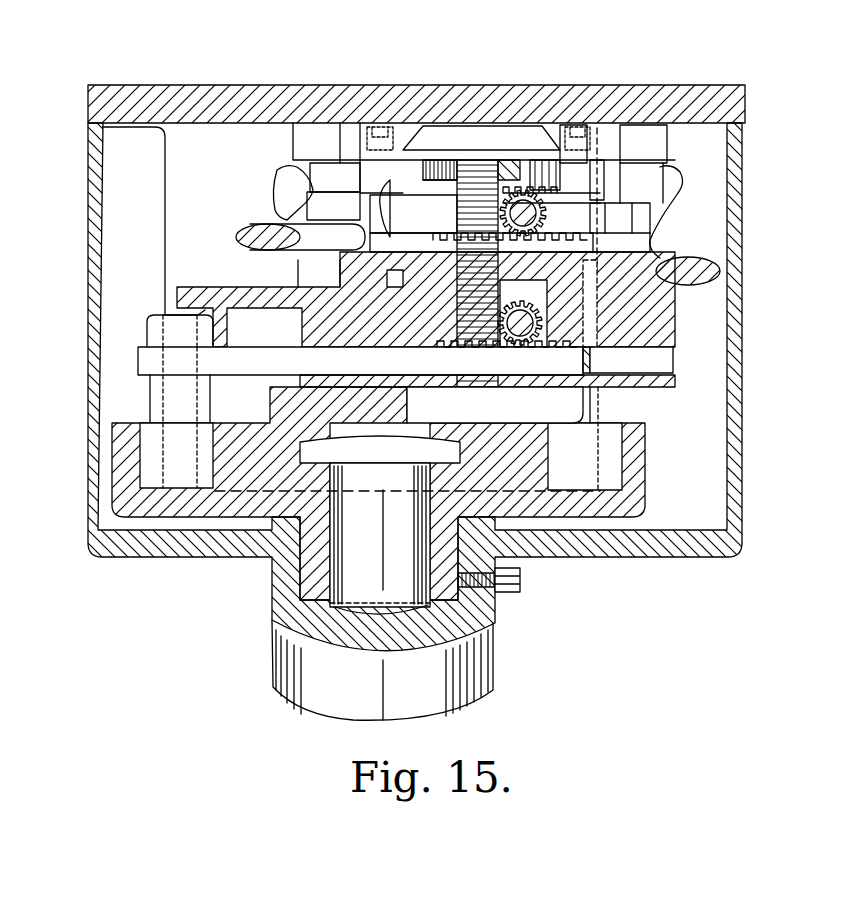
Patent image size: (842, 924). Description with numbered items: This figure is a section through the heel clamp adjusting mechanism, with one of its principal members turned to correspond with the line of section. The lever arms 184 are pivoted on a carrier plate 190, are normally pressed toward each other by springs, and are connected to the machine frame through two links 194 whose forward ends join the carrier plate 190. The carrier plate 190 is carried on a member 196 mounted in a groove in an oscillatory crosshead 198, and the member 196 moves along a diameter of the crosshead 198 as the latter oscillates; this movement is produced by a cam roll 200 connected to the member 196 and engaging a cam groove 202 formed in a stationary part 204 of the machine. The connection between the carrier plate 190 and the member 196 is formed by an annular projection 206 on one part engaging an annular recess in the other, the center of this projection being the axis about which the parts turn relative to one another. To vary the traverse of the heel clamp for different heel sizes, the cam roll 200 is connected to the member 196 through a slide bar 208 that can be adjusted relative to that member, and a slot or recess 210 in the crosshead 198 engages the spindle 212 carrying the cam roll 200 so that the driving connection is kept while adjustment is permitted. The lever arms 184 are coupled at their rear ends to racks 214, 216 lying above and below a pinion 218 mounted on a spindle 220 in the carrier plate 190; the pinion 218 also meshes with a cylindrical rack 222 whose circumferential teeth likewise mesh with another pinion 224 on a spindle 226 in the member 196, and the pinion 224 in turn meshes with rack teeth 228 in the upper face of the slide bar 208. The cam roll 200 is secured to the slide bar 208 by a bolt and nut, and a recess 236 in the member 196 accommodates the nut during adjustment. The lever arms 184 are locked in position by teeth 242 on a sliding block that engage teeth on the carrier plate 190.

The lever arms 184 is at (280, 187).
The carrier plate 190 is at (277, 200).
The links 194 is at (263, 235).
The member 196 is at (660, 333).
The oscillatory crosshead 198 is at (578, 394).
The cam roll 200 is at (147, 462).
The cam groove 202 is at (612, 483).
The stationary part 204 is at (658, 557).
The annular projection 206 is at (398, 260).
The slide bar 208 is at (248, 357).
The slot or recess 210 is at (220, 405).
The spindle 212 is at (160, 400).
The rack 214 is at (592, 145).
The rack 216 is at (643, 243).
The pinion 218 is at (532, 188).
The spindle 220 is at (507, 167).
The rack 222 is at (466, 392).
The pinion 224 is at (645, 252).
The spindle 226 is at (520, 343).
The rack teeth 228 is at (592, 350).
The recess 236 is at (227, 315).
The teeth 242 is at (443, 160).